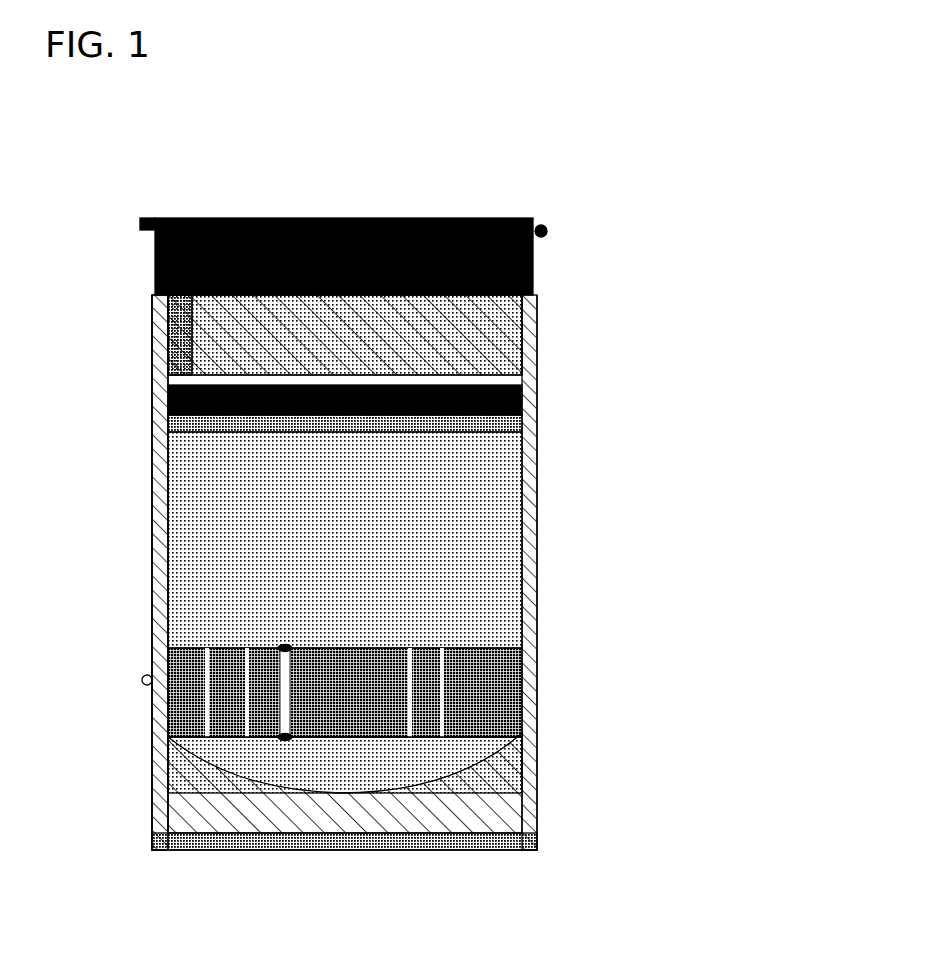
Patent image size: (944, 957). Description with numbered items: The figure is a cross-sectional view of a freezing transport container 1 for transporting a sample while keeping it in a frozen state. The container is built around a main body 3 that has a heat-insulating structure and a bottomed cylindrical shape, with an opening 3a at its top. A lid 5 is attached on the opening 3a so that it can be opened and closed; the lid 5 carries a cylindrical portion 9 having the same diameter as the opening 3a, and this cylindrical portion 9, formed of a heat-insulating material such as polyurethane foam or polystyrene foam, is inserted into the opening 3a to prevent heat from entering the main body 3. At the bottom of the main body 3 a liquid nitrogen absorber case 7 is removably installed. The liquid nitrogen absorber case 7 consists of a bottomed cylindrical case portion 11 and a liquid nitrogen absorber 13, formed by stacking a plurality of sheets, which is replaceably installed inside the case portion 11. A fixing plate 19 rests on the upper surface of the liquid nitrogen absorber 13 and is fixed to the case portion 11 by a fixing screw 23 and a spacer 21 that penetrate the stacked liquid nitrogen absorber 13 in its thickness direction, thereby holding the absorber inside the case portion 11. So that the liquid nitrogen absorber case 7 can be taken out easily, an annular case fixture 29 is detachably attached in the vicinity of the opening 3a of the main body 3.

The freezing transport container 1 is at (655, 196).
The main body 3 is at (535, 795).
The opening 3a is at (533, 303).
The lid 5 is at (178, 218).
The liquid nitrogen absorber case 7 is at (160, 528).
The cylindrical portion 9 is at (157, 320).
The case portion 11 is at (520, 514).
The liquid nitrogen absorber 13 is at (153, 693).
The fixing plate 19 is at (488, 650).
The spacer 21 is at (522, 722).
The fixing screw 23 is at (285, 648).
The annular case fixture 29 is at (533, 388).